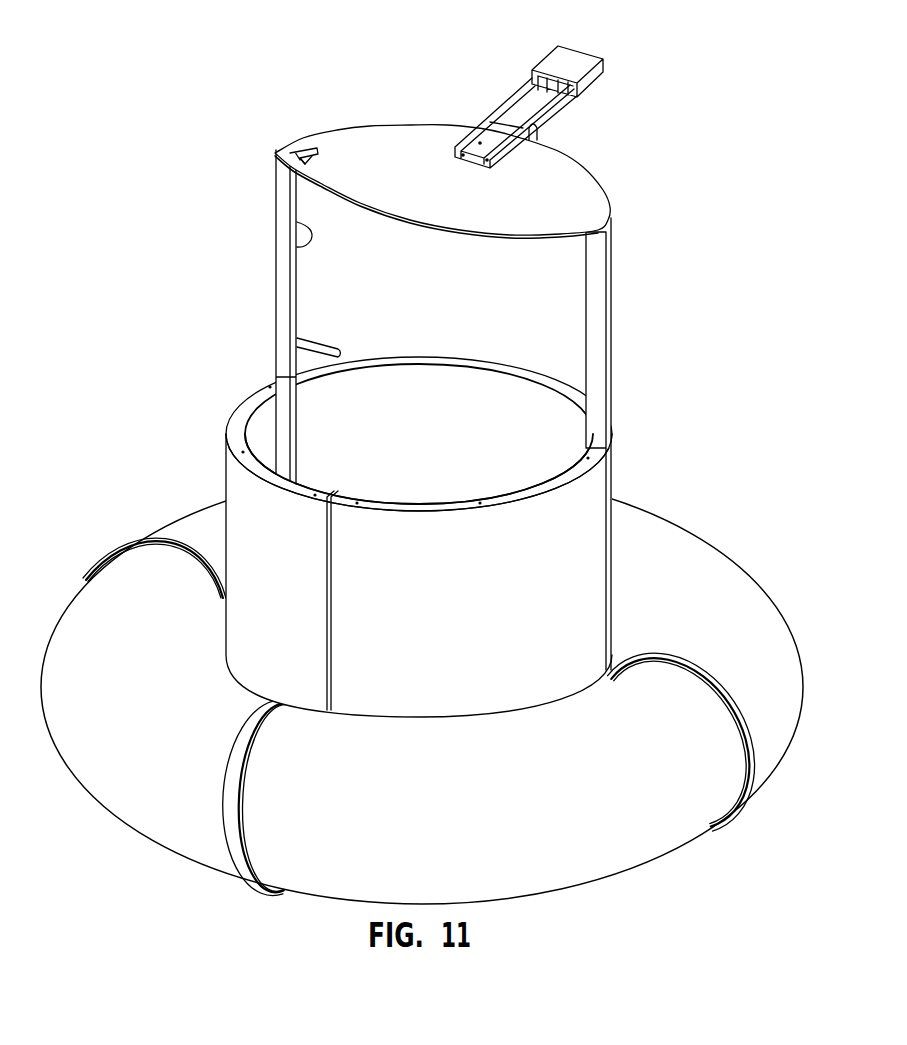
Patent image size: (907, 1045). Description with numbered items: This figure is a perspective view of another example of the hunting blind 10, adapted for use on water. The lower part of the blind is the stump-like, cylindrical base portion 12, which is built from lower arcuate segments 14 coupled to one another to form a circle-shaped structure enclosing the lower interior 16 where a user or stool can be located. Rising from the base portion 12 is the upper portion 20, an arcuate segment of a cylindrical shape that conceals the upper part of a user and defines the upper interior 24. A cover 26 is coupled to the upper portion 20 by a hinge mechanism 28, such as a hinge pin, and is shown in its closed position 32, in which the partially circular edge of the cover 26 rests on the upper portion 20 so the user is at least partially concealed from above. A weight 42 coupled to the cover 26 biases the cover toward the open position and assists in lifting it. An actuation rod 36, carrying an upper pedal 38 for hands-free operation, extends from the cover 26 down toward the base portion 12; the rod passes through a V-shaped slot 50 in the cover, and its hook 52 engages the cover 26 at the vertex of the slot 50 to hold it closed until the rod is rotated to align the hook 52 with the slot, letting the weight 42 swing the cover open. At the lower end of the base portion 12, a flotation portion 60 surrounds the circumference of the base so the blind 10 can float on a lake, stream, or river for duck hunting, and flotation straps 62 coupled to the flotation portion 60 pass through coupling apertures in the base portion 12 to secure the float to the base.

The hunting blind 10 is at (473, 466).
The base portion 12 is at (573, 578).
The lower arcuate segments 14 is at (250, 519).
The lower interior 16 is at (264, 426).
The upper portion 20 is at (612, 312).
The upper interior 24 is at (546, 335).
The cover 26 is at (562, 183).
The hinge mechanism 28 is at (537, 135).
The closed position 32 is at (419, 96).
The actuation rod 36 is at (310, 247).
The upper pedal 38 is at (335, 345).
The weight 42 is at (573, 60).
The slot 50 is at (291, 146).
The hook 52 is at (307, 143).
The flotation portion 60 is at (777, 670).
The flotation straps 62 is at (158, 536).